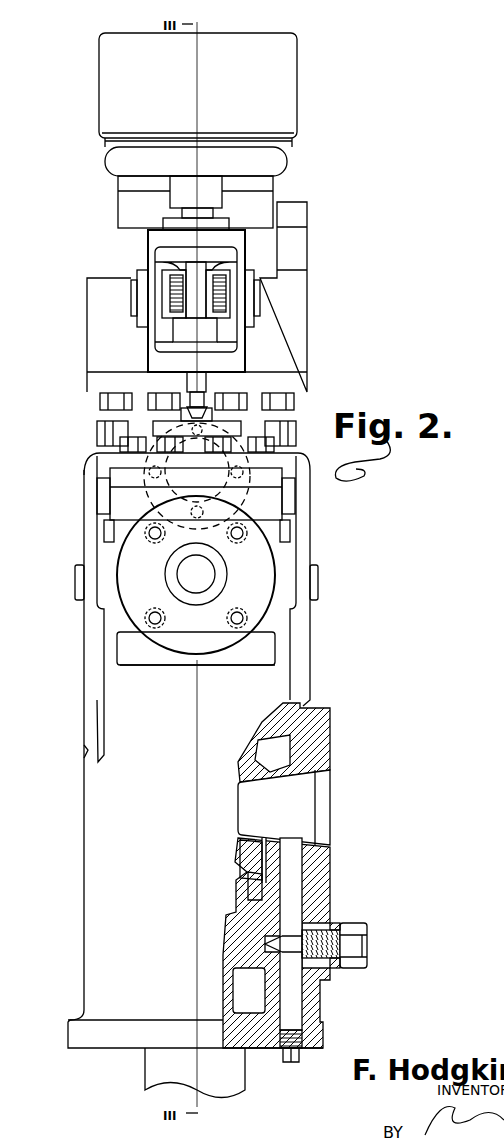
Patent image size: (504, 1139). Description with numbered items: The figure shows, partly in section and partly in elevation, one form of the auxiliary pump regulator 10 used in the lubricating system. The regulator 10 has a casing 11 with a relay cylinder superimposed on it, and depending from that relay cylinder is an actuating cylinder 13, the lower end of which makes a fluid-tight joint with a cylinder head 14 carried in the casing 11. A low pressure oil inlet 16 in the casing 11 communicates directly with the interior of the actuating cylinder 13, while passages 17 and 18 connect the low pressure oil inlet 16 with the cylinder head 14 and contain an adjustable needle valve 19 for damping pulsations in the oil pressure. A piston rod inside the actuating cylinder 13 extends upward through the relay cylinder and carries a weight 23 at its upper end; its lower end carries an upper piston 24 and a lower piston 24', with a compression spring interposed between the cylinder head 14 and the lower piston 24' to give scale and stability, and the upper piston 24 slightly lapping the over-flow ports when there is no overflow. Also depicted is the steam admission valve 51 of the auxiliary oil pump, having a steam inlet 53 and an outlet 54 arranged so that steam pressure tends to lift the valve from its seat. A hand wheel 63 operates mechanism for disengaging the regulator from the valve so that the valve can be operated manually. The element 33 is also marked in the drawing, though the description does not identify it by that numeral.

The auxiliary pump regulator 10 is at (80, 305).
The casing 11 is at (83, 832).
The actuating cylinder 13 is at (258, 902).
The cylinder head 14 is at (238, 966).
The low pressure oil inlet 16 is at (331, 793).
The passage 17 is at (293, 890).
The passage 18 is at (263, 946).
The adjustable needle valve 19 is at (368, 950).
The weight 23 is at (100, 72).
The upper piston 24 is at (304, 742).
The lower piston 24' is at (305, 860).
The bracket 33 is at (183, 462).
The steam admission valve 51 is at (117, 648).
The steam inlet 53 is at (165, 665).
The outlet 54 is at (188, 572).
The hand wheel 63 is at (288, 160).